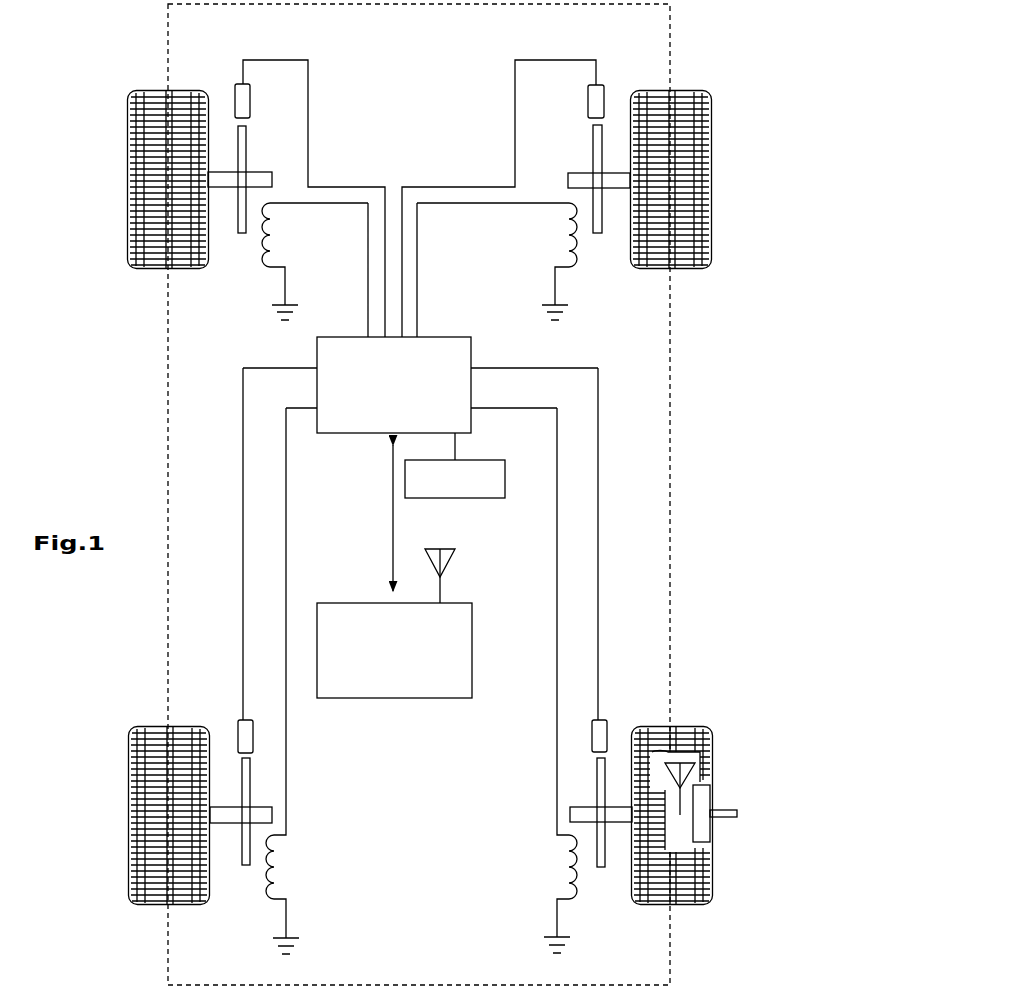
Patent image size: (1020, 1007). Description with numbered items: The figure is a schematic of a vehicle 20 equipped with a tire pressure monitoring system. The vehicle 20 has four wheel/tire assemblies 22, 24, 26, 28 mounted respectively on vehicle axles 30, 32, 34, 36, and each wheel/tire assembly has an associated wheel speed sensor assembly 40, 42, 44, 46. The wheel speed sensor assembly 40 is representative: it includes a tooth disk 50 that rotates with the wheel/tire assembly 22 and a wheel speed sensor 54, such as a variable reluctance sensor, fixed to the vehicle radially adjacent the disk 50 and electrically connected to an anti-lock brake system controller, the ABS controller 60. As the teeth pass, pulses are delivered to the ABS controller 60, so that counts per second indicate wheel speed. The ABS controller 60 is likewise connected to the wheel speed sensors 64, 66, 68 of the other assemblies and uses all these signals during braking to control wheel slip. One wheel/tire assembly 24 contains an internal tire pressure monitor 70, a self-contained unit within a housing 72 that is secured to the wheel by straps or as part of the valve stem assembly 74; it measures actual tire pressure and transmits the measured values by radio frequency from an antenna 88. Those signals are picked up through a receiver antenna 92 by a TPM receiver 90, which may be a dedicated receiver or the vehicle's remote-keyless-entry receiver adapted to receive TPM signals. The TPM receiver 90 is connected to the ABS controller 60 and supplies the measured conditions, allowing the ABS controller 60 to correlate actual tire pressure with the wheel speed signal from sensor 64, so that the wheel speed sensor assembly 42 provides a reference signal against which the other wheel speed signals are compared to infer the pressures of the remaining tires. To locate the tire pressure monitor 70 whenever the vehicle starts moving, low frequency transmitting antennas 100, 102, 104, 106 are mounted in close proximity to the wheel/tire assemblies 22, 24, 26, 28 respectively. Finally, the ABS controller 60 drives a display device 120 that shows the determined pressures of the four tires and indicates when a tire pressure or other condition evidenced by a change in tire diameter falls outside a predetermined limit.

The vehicle 20 is at (670, 347).
The wheel/tire assembly 22 is at (706, 89).
The wheel/tire assembly 24 is at (702, 727).
The wheel/tire assembly 26 is at (142, 727).
The wheel/tire assembly 28 is at (137, 90).
The vehicle axle 30 is at (568, 175).
The vehicle axle 32 is at (575, 804).
The vehicle axle 34 is at (266, 805).
The vehicle axle 36 is at (270, 172).
The wheel speed sensor assembly 40 is at (618, 80).
The wheel speed sensor assembly 42 is at (622, 708).
The wheel speed sensor assembly 44 is at (219, 708).
The wheel speed sensor assembly 46 is at (232, 70).
The tooth disk 50 is at (600, 237).
The wheel speed sensor 54 is at (590, 105).
The ABS controller 60 is at (460, 337).
The wheel speed sensor 64 is at (594, 738).
The wheel speed sensor 66 is at (249, 738).
The wheel speed sensor 68 is at (243, 100).
The tire pressure monitor 70 is at (712, 795).
The housing 72 is at (703, 832).
The valve stem assembly 74 is at (742, 820).
The antenna 88 is at (695, 773).
The TPM receiver 90 is at (463, 633).
The receiver antenna 92 is at (449, 556).
The LF transmitting antenna 100 is at (574, 232).
The LF transmitting antenna 102 is at (570, 868).
The LF transmitting antenna 104 is at (280, 864).
The LF transmitting antenna 106 is at (268, 232).
The display device 120 is at (463, 499).